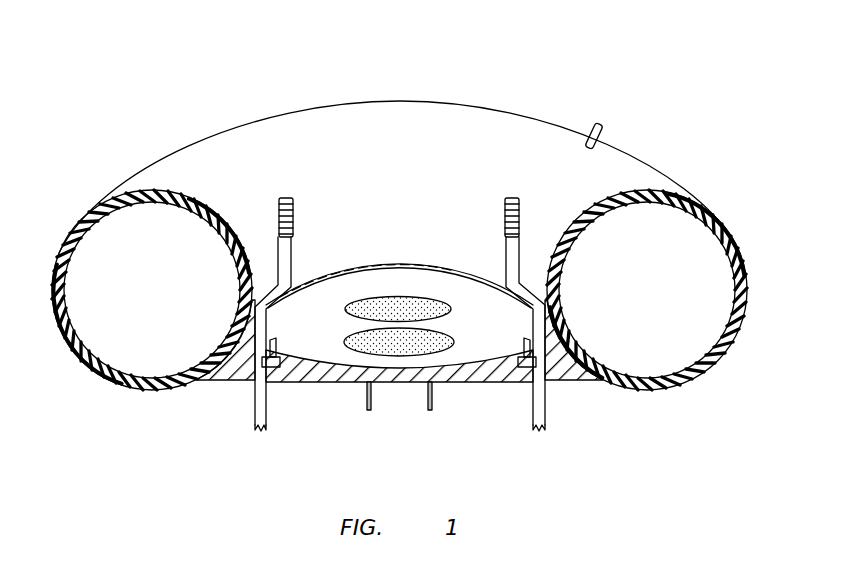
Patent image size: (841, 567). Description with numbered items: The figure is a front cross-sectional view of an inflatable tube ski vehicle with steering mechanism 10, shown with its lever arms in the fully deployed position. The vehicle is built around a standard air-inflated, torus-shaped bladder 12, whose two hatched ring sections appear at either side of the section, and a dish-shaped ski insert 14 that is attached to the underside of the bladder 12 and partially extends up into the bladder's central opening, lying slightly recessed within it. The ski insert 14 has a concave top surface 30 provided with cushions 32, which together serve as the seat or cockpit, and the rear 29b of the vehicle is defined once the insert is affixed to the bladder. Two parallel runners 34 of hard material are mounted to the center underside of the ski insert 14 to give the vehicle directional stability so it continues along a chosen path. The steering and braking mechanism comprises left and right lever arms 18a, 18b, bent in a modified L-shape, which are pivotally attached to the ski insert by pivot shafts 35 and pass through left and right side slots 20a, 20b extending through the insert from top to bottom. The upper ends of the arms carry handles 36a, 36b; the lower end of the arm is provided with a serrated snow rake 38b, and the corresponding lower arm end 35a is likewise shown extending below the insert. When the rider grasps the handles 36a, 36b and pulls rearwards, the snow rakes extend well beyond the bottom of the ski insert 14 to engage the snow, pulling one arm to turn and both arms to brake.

The inflatable tube ski vehicle with steering mechanism 10 is at (733, 104).
The bladder 12 is at (670, 183).
The dish-shaped ski insert 14 is at (322, 381).
The left lever arm 18a is at (540, 260).
The right lever arm 18b is at (287, 262).
The left side slot 20a is at (551, 389).
The right side slot 20b is at (246, 393).
The rear 29b is at (417, 118).
The concave top surface 30 is at (484, 302).
The cushions 32 is at (412, 338).
The runners 34 is at (424, 412).
The pivot shafts 35 is at (277, 367).
The right arm lower end 35a is at (544, 445).
The left handle 36a is at (510, 197).
The right handle 36b is at (286, 197).
The snow rake 38b is at (256, 446).